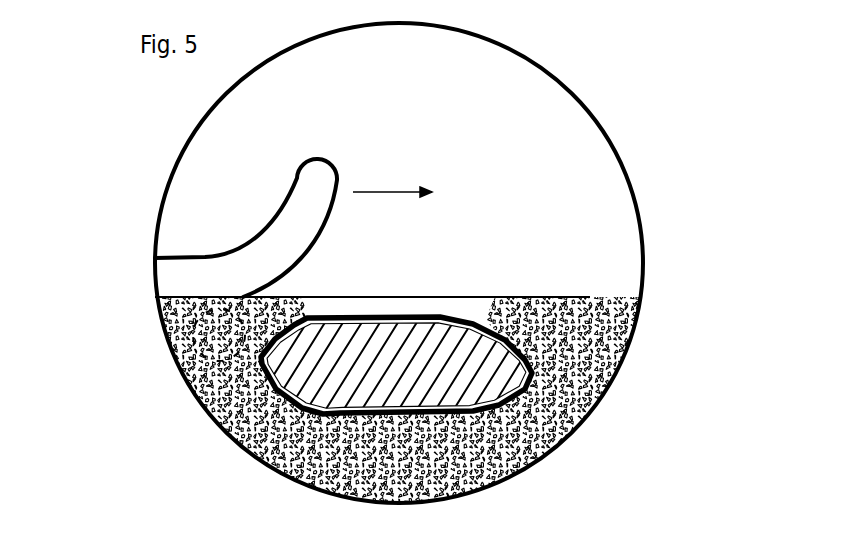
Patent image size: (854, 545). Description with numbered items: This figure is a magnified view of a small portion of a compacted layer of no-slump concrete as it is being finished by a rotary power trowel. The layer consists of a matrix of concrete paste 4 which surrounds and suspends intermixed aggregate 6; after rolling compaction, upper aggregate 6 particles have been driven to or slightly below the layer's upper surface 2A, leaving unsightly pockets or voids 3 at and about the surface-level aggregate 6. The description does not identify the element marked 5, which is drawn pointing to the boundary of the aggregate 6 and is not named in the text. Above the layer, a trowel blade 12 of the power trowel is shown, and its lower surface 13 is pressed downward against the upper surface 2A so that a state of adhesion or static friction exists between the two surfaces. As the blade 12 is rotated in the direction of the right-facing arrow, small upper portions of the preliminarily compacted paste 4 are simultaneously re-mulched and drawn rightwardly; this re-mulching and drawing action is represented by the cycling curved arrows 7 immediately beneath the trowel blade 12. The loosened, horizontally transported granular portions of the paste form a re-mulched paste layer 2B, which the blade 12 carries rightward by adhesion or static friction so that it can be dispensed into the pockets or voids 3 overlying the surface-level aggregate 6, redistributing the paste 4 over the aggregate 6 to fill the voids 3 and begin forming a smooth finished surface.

The upper surface 2A is at (589, 297).
The re-mulched paste layer 2B is at (160, 315).
The pockets or voids 3 is at (475, 312).
The concrete paste 4 is at (260, 440).
The outer shell of embedded body 5 is at (422, 313).
The aggregate 6 is at (480, 385).
The cycling curved arrows 7 is at (173, 357).
The trowel blade 12 is at (312, 193).
The lower surface 13 is at (197, 297).